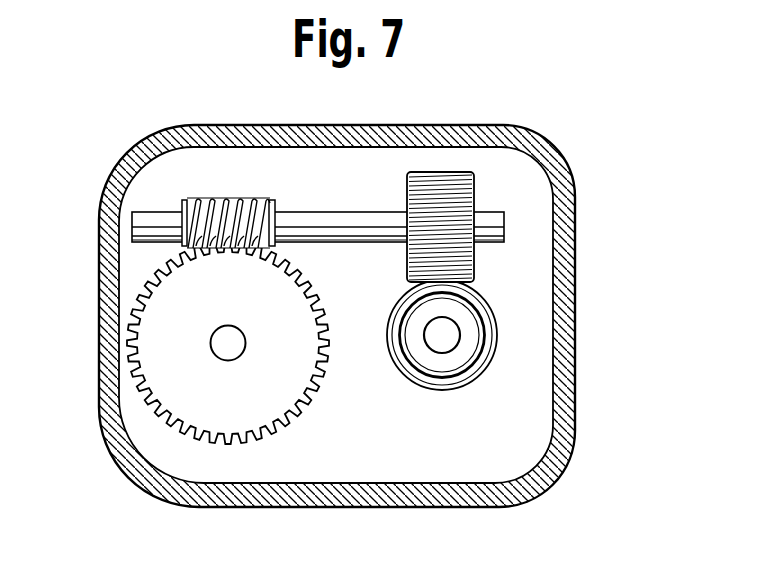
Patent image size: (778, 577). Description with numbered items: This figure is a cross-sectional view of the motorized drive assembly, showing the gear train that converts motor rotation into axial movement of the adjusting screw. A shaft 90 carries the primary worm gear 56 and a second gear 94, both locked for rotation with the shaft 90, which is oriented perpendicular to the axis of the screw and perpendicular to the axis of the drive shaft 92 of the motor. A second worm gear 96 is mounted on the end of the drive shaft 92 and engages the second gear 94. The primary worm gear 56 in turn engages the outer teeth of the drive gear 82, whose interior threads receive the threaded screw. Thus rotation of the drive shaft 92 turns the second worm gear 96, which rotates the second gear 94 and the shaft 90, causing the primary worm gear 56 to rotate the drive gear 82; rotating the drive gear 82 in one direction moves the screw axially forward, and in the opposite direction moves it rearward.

The primary worm gear 56 is at (258, 198).
The drive gear 82 is at (200, 433).
The shaft 90 is at (150, 212).
The drive shaft 92 is at (445, 342).
The second gear 94 is at (446, 172).
The second worm gear 96 is at (497, 318).